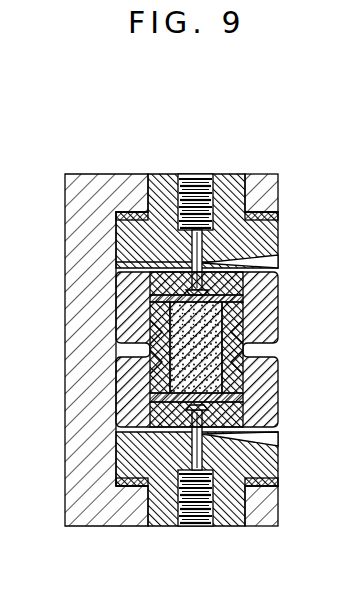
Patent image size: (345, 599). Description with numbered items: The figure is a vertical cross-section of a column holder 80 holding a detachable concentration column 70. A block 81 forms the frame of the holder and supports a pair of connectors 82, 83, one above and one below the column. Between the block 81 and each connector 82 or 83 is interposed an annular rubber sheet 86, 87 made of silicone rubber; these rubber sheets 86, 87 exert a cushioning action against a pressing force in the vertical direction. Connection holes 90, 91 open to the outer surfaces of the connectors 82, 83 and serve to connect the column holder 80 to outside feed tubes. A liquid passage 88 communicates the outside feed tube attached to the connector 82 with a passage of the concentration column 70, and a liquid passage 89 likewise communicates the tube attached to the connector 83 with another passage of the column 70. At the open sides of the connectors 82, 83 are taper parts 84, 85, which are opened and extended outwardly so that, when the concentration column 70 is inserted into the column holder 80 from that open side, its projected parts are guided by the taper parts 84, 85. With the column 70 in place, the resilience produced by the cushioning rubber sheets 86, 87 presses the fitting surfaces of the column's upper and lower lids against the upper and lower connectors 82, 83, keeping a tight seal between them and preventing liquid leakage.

The concentration column 70 is at (317, 326).
The column holder 80 is at (174, 349).
The block 81 is at (92, 174).
The connector 82 is at (230, 174).
The connector 83 is at (228, 526).
The taper part 84 is at (278, 258).
The taper part 85 is at (272, 440).
The rubber sheet 86 is at (217, 225).
The rubber sheet 87 is at (216, 475).
The liquid passage 88 is at (203, 246).
The liquid passage 89 is at (203, 448).
The connection hole 90 is at (213, 217).
The connection hole 91 is at (209, 482).